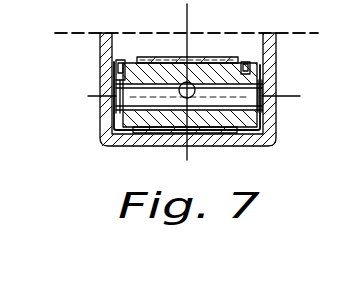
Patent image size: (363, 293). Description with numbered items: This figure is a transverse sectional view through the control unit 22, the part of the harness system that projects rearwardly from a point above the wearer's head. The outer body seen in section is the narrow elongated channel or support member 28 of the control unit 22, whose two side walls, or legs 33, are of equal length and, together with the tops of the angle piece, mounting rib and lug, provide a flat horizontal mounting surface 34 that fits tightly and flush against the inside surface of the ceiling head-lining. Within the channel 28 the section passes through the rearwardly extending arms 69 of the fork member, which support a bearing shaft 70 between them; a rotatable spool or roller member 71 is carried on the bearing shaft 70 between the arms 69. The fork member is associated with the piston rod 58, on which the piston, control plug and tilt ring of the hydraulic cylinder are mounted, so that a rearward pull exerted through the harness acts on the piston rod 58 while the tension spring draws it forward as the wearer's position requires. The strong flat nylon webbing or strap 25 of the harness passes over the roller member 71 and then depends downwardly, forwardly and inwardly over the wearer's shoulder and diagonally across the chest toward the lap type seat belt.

The control unit 22 is at (250, 148).
The strap 25 is at (163, 56).
The channel 28 is at (153, 148).
The legs 33 is at (103, 66).
The mounting surface 34 is at (198, 33).
The piston rod 58 is at (204, 62).
The arms 69 is at (124, 62).
The bearing shaft 70 is at (113, 123).
The roller member 71 is at (202, 115).